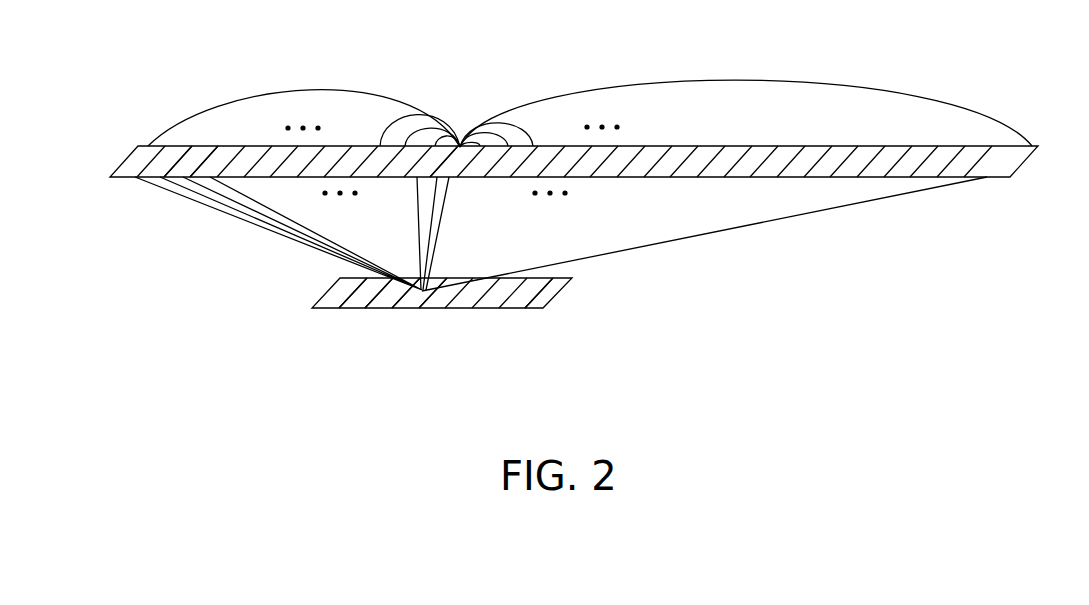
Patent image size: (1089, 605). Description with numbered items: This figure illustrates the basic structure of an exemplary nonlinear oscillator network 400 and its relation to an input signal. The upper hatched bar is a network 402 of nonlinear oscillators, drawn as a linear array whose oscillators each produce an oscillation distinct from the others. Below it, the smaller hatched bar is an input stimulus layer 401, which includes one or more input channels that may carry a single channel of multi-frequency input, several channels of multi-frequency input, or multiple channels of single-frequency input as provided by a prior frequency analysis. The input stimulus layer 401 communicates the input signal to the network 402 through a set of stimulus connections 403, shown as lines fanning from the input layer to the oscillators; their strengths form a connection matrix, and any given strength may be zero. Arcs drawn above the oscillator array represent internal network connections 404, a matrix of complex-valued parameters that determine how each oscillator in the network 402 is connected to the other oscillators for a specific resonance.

The network 400 is at (231, 32).
The input stimulus layer 401 is at (583, 294).
The network of nonlinear oscillators 402 is at (107, 156).
The stimulus connections 403 is at (203, 220).
The internal network connections 404 is at (477, 90).